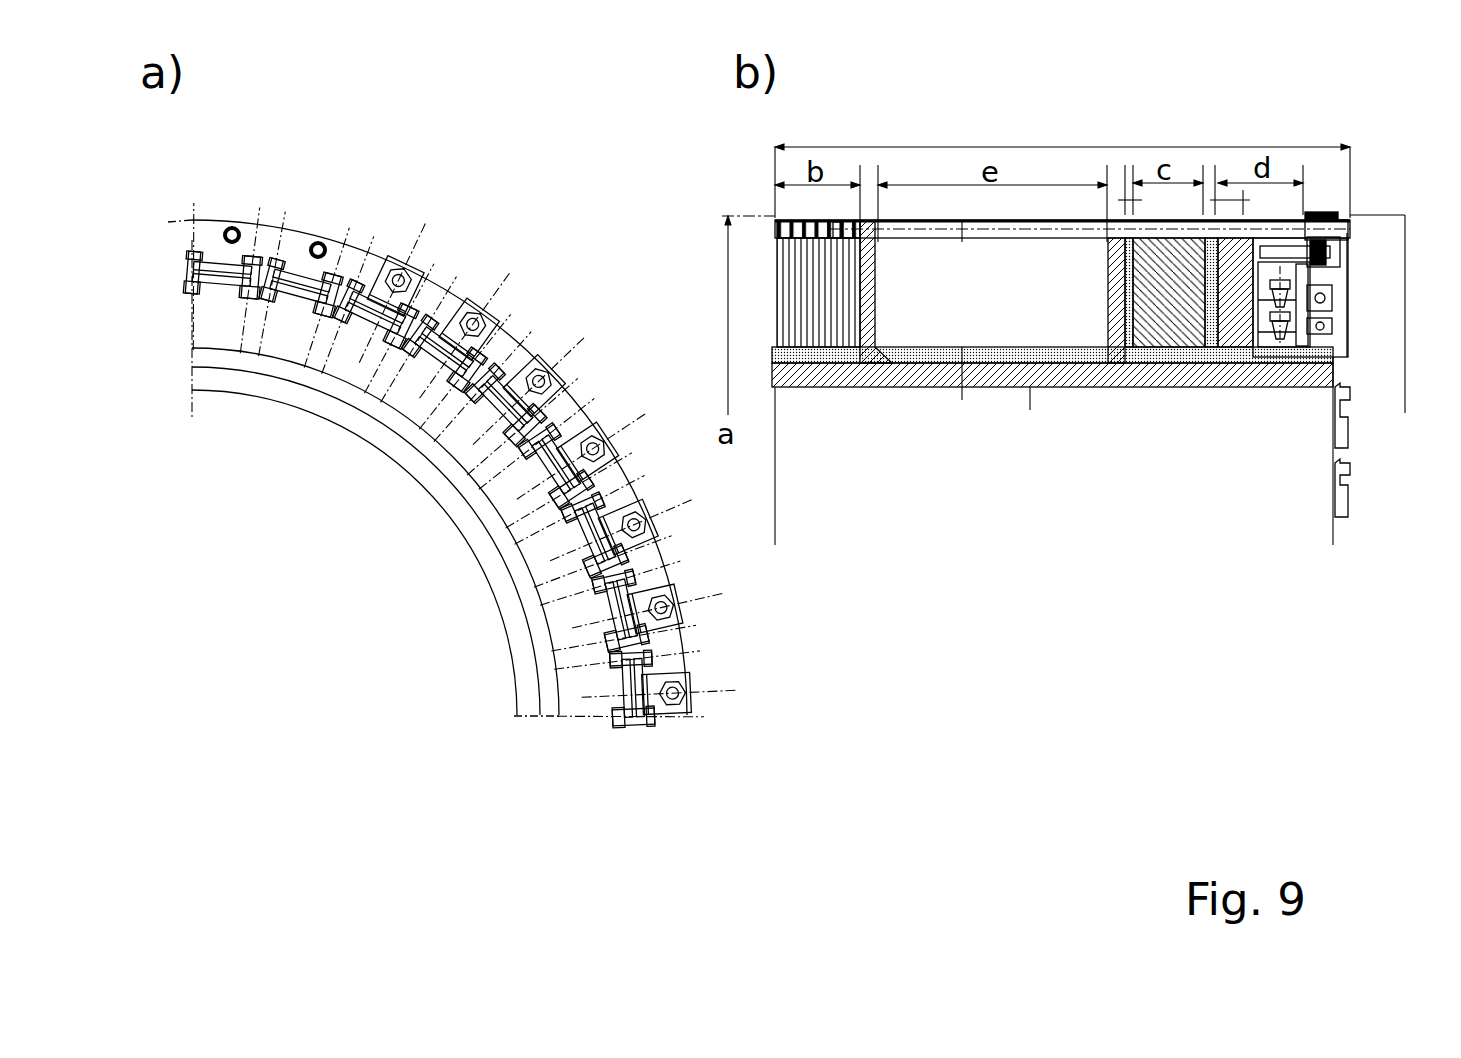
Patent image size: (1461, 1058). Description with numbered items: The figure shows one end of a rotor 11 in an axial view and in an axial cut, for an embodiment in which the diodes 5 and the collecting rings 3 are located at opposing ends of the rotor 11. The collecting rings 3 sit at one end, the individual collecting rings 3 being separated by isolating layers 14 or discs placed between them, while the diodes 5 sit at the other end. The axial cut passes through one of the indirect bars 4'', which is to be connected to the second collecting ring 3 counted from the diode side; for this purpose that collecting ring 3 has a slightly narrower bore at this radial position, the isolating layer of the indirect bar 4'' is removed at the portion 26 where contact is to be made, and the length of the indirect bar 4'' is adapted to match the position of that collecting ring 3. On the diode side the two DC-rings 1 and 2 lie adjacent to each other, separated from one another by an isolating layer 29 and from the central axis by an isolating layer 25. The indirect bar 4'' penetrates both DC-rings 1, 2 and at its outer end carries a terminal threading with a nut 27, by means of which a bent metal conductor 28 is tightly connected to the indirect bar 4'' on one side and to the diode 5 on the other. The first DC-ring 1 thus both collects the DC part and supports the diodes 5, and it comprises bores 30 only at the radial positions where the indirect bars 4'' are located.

The first DC-ring 1 is at (270, 232).
The second DC-ring 2 is at (1153, 265).
The collecting ring 3 is at (862, 317).
The indirect bar 4'' is at (904, 304).
The diode 5 is at (513, 422).
The rotor 11 is at (340, 628).
The isolating layer 14 is at (812, 340).
The isolating layer 25 is at (843, 370).
The portion 26 is at (840, 223).
The nut 27 is at (470, 312).
The bent metal conductor 28 is at (493, 327).
The isolating layer 29 is at (1205, 340).
The bore 30 is at (323, 244).